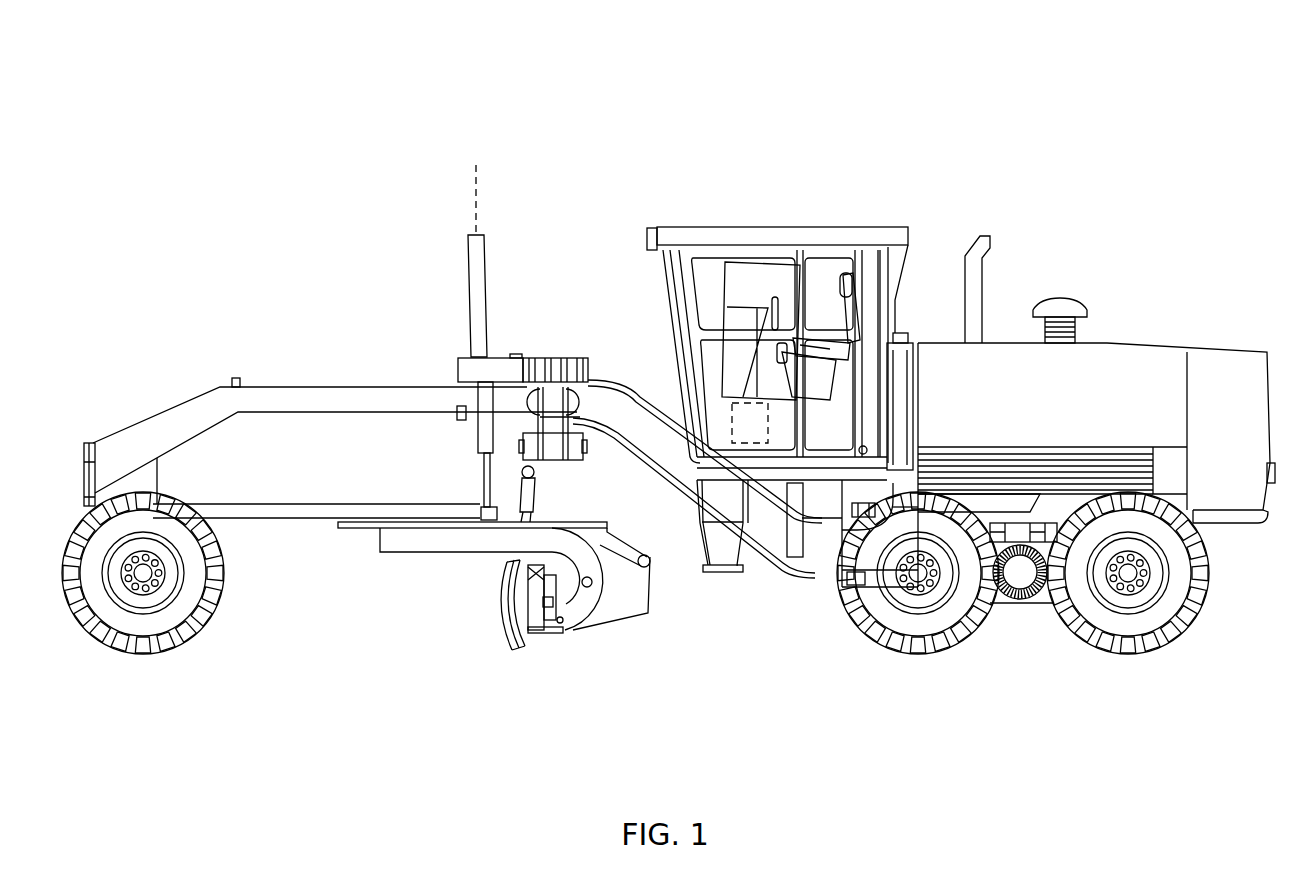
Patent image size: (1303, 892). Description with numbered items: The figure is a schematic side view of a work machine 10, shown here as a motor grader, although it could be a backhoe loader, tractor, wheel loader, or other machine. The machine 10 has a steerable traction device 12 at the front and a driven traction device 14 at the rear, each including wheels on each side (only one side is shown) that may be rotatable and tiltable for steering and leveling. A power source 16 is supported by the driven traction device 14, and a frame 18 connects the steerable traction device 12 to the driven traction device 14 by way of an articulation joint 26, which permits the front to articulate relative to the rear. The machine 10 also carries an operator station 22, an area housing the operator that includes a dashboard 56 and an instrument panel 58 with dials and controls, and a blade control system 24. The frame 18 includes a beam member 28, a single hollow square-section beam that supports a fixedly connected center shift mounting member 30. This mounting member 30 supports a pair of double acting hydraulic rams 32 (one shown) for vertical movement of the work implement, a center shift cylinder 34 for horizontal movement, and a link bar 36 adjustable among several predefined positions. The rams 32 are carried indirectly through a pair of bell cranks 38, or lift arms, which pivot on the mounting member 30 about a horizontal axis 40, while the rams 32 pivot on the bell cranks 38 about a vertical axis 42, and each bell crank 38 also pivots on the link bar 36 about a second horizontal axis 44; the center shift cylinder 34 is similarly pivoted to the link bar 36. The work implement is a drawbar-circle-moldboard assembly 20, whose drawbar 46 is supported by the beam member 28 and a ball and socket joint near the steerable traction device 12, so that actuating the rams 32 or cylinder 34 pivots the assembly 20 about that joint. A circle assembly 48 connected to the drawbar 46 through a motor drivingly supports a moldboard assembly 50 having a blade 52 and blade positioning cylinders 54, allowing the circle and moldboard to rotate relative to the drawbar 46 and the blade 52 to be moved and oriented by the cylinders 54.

The machine 10 is at (692, 106).
The steerable traction device 12 is at (183, 637).
The driven traction device 14 is at (952, 618).
The power source 16 is at (1060, 414).
The frame 18 is at (234, 374).
The drawbar-circle-moldboard assembly 20 is at (426, 604).
The operator station 22 is at (833, 210).
The blade control system 24 is at (739, 438).
The articulation joint 26 is at (833, 547).
The beam member 28 is at (306, 402).
The center shift mounting member 30 is at (605, 382).
The double acting hydraulic ram 32 is at (477, 275).
The center shift cylinder 34 is at (530, 488).
The link bar 36 is at (553, 463).
The bell crank 38 is at (472, 368).
The horizontal axis 40 is at (458, 372).
The vertical axis 42 is at (476, 192).
The horizontal axis 44 is at (583, 450).
The drawbar 46 is at (355, 510).
The circle assembly 48 is at (366, 543).
The moldboard assembly 50 is at (586, 655).
The blade 52 is at (512, 628).
The blade positioning cylinder 54 is at (575, 625).
The dashboard 56 is at (737, 393).
The instrument panel 58 is at (826, 348).